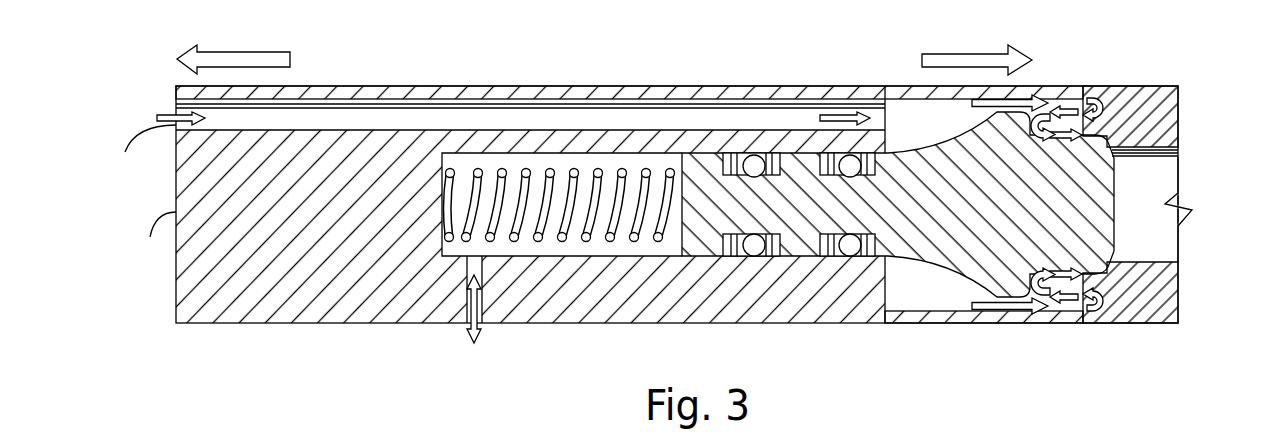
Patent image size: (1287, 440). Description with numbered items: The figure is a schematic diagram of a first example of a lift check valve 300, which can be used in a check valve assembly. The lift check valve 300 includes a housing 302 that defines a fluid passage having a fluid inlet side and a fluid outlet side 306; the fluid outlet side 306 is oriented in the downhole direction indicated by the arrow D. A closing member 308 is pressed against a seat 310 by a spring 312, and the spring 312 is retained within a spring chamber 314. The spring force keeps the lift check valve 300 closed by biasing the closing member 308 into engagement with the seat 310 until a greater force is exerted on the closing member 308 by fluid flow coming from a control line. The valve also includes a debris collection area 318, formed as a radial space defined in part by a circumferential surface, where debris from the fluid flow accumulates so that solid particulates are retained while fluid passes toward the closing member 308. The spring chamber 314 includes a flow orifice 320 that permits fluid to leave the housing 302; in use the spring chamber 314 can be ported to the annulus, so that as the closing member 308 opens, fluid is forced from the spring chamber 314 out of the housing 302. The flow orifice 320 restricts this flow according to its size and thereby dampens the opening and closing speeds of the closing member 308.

The lift check valve 300 is at (826, 52).
The housing 302 is at (566, 86).
The fluid outlet side 306 is at (1145, 192).
The closing member 308 is at (985, 253).
The seat 310 is at (1122, 130).
The spring 312 is at (636, 238).
The spring chamber 314 is at (537, 250).
The debris collection area 318 is at (1107, 312).
The flow orifice 320 is at (467, 310).